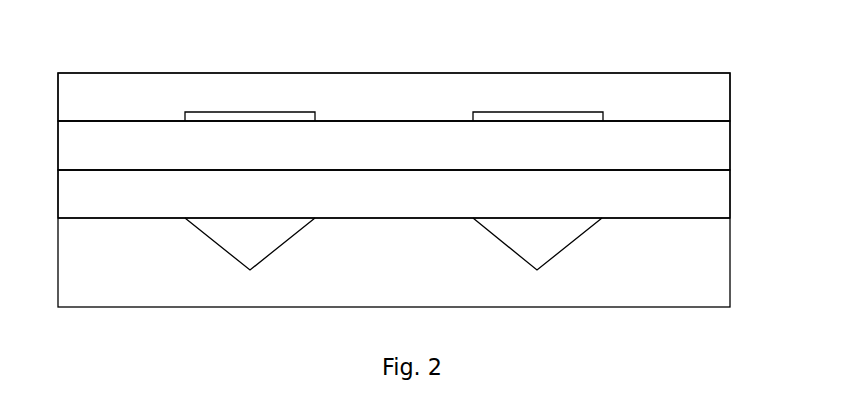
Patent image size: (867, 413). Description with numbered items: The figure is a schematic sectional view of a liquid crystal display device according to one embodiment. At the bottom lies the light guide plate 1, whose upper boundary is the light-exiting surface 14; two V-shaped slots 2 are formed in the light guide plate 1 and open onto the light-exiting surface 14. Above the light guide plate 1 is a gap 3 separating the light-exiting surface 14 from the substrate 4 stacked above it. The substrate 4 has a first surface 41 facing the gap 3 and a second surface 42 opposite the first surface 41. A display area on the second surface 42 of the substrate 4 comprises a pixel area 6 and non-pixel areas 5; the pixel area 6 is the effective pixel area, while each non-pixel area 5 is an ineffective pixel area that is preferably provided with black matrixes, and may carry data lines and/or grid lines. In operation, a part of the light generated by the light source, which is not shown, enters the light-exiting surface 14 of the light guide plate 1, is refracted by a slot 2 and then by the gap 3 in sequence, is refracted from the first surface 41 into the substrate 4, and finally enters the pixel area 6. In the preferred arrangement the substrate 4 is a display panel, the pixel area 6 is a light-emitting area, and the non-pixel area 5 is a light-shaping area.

The light guide plate 1 is at (394, 190).
The slot 2 is at (393, 244).
The gap 3 is at (394, 194).
The substrate 4 is at (394, 145).
The non-pixel area 5 is at (252, 111).
The pixel area 6 is at (394, 97).
The light-exiting surface 14 is at (708, 218).
The first surface 41 is at (708, 170).
The second surface 42 is at (708, 121).